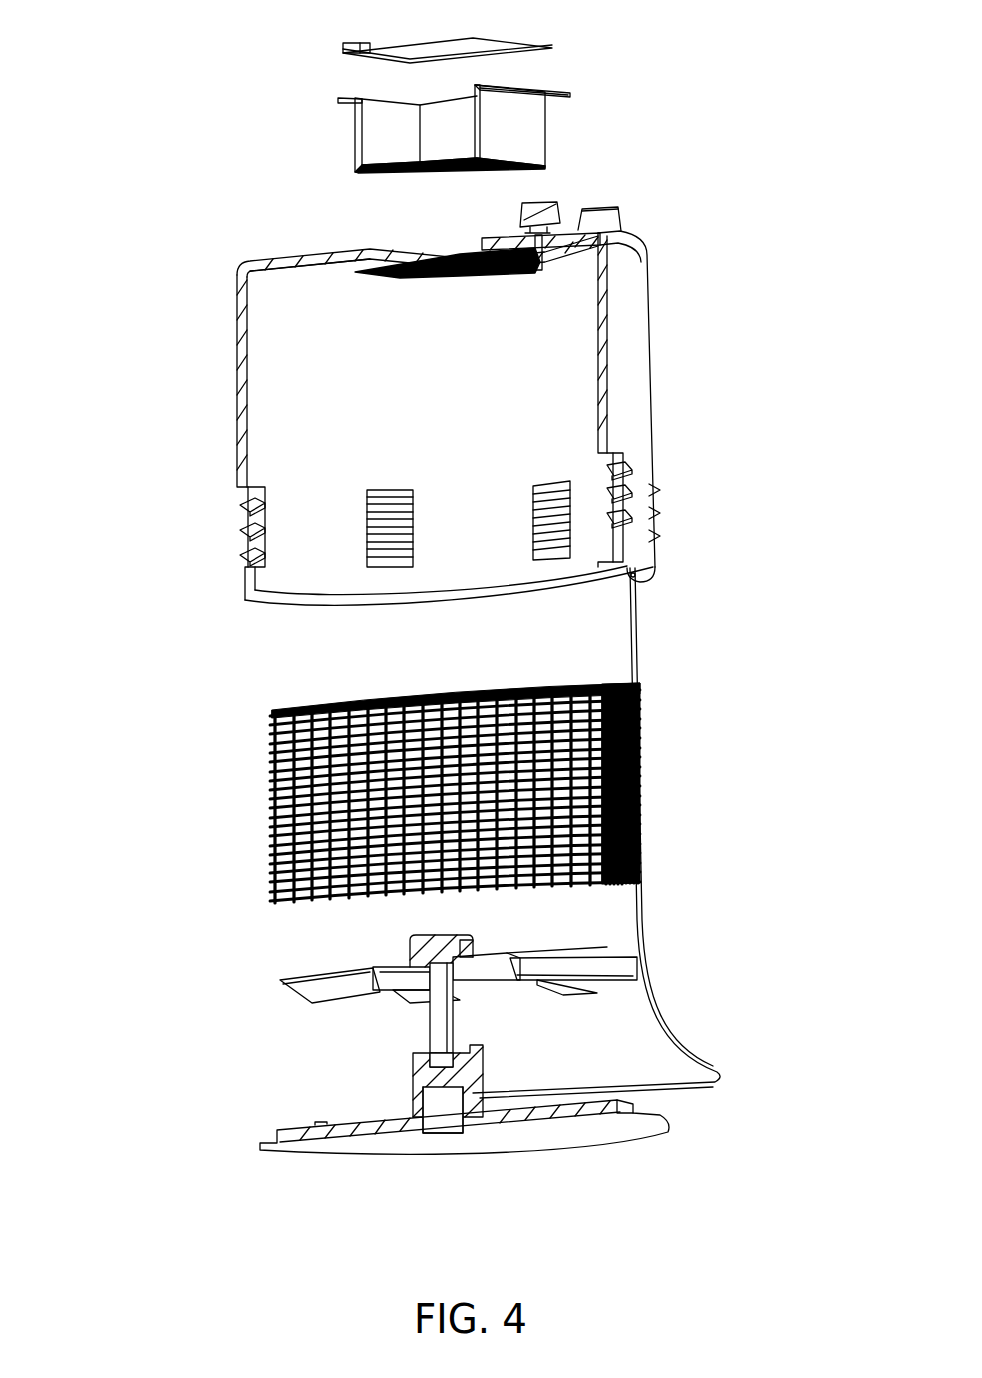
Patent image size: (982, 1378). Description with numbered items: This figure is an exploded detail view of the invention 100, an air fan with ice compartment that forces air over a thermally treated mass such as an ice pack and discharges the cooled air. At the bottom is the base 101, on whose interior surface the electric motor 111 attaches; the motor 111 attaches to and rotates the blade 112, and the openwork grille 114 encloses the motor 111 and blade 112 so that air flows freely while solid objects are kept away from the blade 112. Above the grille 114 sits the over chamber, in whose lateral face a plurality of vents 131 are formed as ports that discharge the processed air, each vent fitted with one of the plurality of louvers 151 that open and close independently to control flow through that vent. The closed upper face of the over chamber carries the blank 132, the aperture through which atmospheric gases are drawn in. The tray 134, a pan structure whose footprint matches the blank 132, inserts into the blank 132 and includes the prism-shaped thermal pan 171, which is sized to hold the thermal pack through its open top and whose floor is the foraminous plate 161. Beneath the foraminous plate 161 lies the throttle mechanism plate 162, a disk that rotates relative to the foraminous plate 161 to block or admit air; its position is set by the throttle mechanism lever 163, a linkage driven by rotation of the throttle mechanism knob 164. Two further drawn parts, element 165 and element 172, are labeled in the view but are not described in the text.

The invention 100 is at (108, 97).
The base 101 is at (566, 1128).
The motor 111 is at (447, 1112).
The blade 112 is at (310, 987).
The grille 114 is at (282, 860).
The plurality of vents 131 is at (545, 488).
The blank 132 is at (357, 263).
The tray 134 is at (577, 87).
The plurality of louvers 151 is at (243, 530).
The foraminous plate 161 is at (400, 178).
The throttle mechanism plate 162 is at (465, 280).
The throttle mechanism lever 163 is at (547, 273).
The throttle mechanism knob 164 is at (548, 213).
The cover plate 165 is at (493, 50).
The thermal pan 171 is at (358, 146).
The tab 172 is at (348, 100).